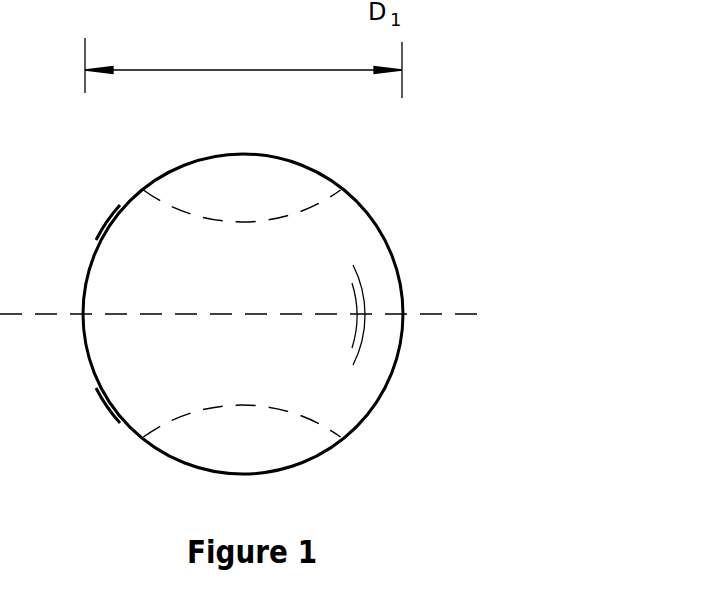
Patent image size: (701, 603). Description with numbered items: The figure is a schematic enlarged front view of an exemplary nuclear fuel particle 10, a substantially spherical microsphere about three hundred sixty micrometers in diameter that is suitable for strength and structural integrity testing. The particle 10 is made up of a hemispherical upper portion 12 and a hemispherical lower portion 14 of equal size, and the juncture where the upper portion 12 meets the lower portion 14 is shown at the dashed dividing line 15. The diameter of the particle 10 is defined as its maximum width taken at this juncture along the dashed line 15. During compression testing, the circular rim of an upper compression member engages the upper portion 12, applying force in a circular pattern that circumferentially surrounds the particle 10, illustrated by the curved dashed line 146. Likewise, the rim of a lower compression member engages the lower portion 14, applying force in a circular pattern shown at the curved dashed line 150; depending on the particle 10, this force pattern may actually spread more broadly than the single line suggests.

The nuclear fuel particle 10 is at (395, 265).
The hemispherical upper portion 12 is at (142, 250).
The hemispherical lower portion 14 is at (142, 375).
The dashed dividing line 15 is at (427, 315).
The curved dashed line 146 is at (323, 200).
The curved dashed line 150 is at (307, 418).